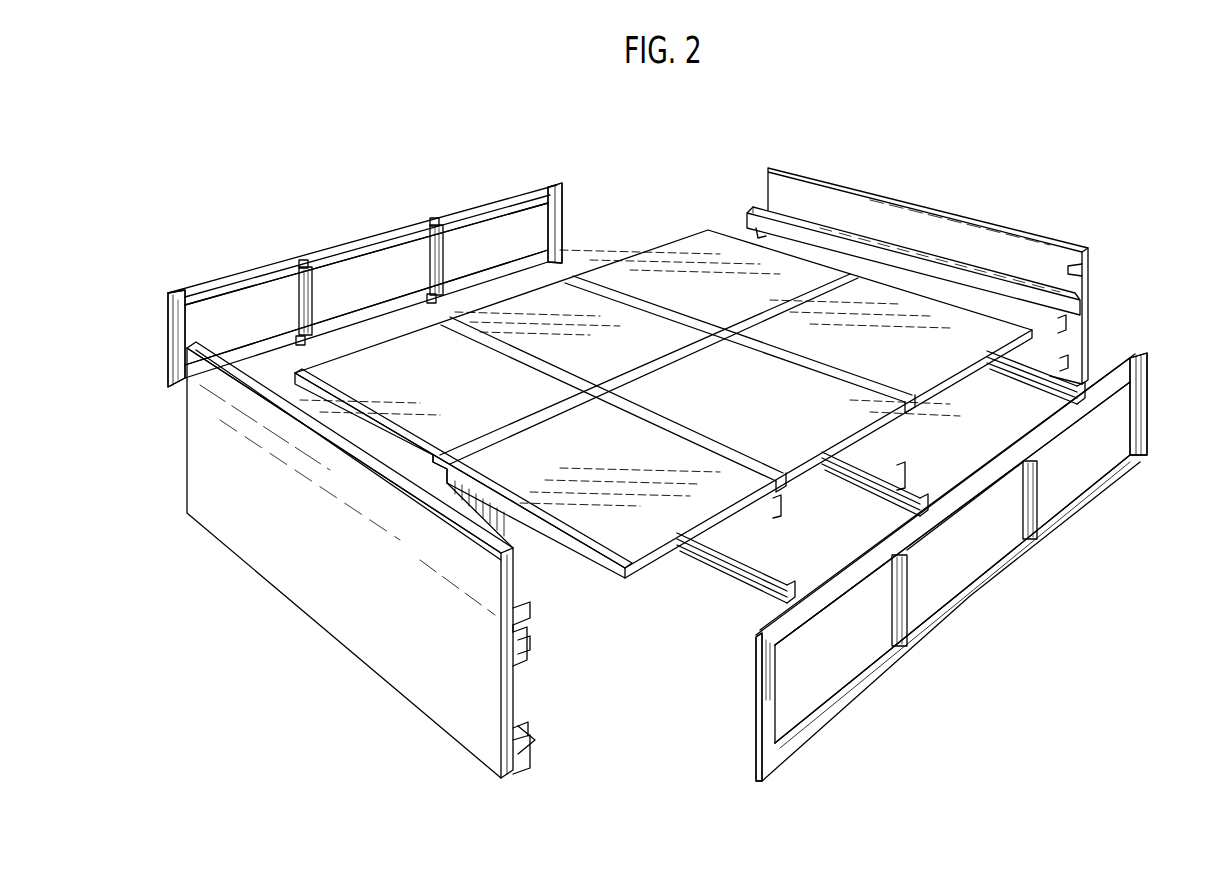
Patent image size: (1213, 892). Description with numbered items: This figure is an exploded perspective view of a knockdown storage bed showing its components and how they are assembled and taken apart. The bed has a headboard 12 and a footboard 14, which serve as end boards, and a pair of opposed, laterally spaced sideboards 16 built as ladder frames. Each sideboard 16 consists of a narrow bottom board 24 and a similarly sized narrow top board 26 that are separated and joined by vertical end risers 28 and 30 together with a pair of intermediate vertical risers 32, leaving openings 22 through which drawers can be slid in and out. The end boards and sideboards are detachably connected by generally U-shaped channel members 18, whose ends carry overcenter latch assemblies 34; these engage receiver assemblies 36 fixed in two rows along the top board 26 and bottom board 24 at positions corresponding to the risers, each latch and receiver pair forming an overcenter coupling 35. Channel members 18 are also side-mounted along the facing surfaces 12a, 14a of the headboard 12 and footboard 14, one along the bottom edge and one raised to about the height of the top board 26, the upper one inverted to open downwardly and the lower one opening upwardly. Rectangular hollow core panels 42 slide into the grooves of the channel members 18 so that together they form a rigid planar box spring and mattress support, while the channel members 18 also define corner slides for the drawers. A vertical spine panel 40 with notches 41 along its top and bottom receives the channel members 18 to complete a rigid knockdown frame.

The headboard 12 is at (398, 690).
The facing surface of headboard 12a is at (522, 675).
The footboard 14 is at (1090, 322).
The facing surface of footboard 14a is at (1087, 275).
The sideboard 16 is at (387, 228).
The U-shaped channel member 18 is at (993, 260).
The opening 22 is at (962, 578).
The bottom board 24 is at (365, 313).
The top board 26 is at (395, 240).
The vertical end riser 28 is at (172, 332).
The vertical end riser 30 is at (563, 213).
The intermediate vertical riser 32 is at (1033, 493).
The overcenter latch assembly 34 is at (1065, 325).
The overcenter coupling 35 is at (552, 640).
The receiver assembly 36 is at (473, 247).
The vertical spine panel 40 is at (518, 527).
The notch 41 is at (433, 473).
The hollow core panel 42 is at (904, 349).